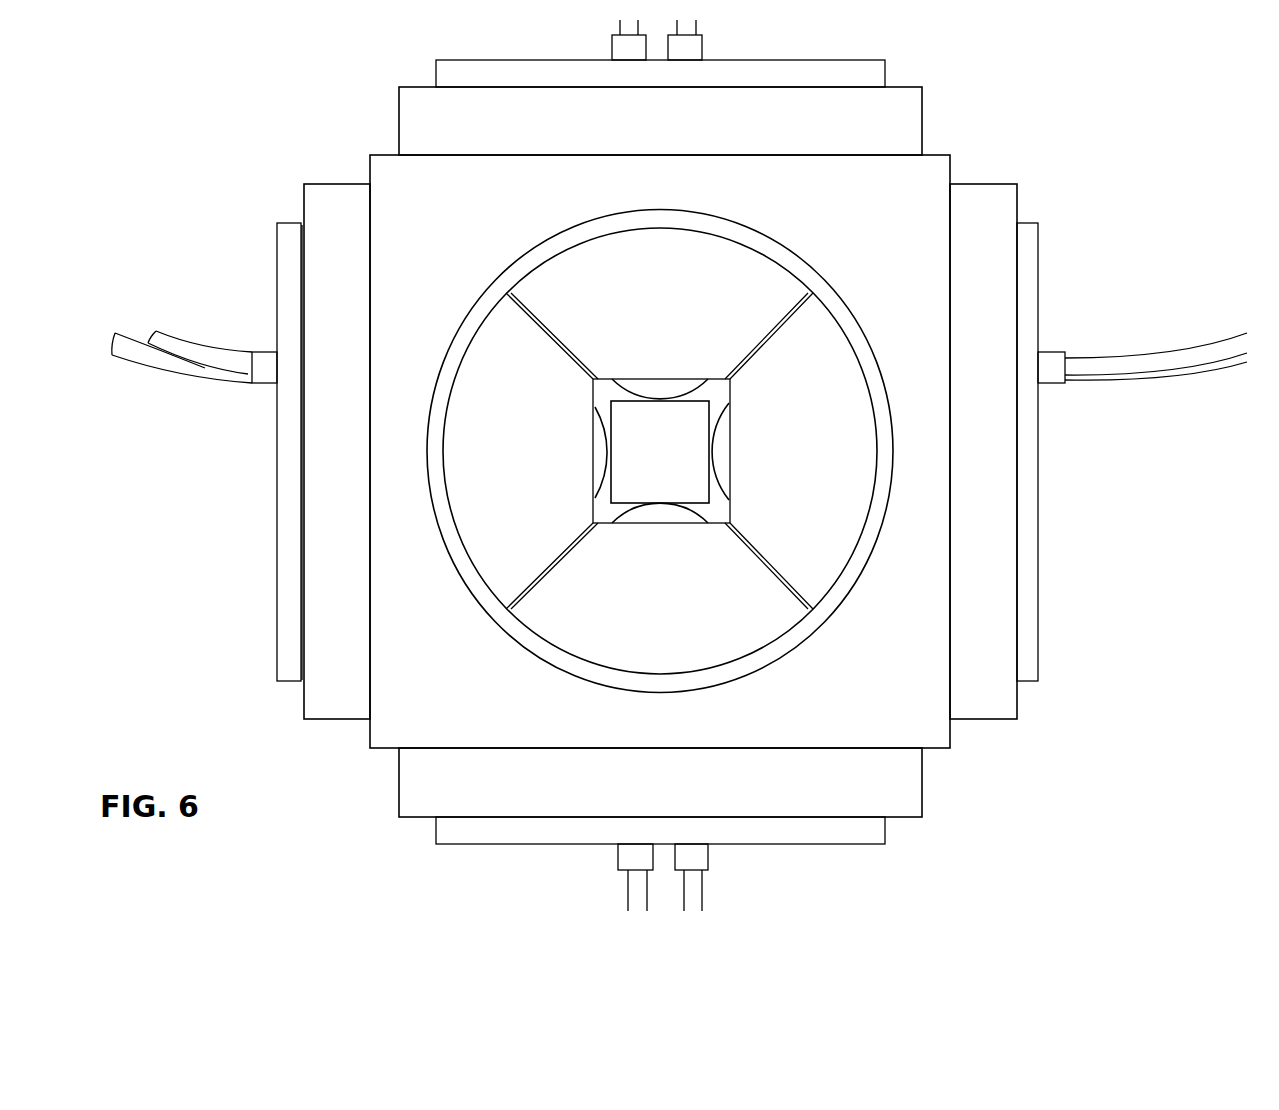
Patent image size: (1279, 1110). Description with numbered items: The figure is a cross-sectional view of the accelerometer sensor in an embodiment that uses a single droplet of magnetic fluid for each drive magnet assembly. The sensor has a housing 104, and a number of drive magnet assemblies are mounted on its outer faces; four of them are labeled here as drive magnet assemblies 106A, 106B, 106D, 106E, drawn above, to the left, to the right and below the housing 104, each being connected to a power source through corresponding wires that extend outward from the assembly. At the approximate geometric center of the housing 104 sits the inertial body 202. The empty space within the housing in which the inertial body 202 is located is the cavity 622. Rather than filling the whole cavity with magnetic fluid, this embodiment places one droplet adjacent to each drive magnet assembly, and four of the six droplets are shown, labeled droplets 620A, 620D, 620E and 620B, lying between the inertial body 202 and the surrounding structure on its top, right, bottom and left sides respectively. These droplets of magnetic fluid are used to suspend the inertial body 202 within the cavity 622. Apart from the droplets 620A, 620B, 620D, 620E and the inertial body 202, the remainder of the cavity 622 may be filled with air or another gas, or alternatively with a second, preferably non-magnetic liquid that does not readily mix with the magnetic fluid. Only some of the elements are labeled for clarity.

The housing 104 is at (930, 647).
The drive magnet assembly 106A is at (905, 122).
The drive magnet assembly 106B is at (332, 520).
The drive magnet assembly 106D is at (978, 535).
The drive magnet assembly 106E is at (905, 782).
The inertial body 202 is at (697, 412).
The cavity 622 is at (605, 392).
The droplet 620A is at (660, 387).
The droplet 620B is at (599, 439).
The droplet 620D is at (718, 447).
The droplet 620E is at (657, 513).